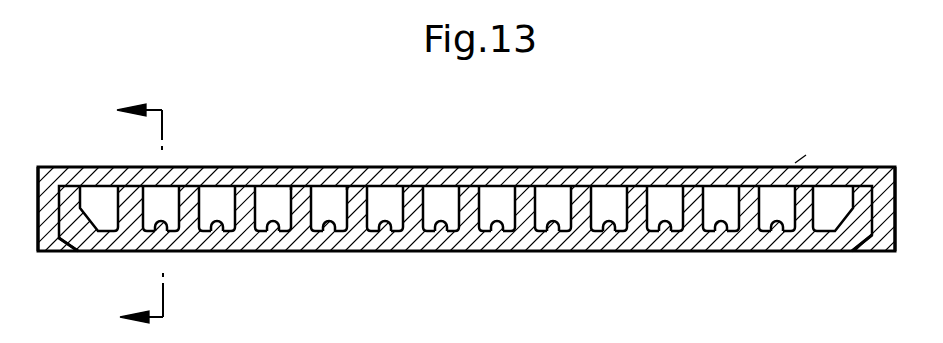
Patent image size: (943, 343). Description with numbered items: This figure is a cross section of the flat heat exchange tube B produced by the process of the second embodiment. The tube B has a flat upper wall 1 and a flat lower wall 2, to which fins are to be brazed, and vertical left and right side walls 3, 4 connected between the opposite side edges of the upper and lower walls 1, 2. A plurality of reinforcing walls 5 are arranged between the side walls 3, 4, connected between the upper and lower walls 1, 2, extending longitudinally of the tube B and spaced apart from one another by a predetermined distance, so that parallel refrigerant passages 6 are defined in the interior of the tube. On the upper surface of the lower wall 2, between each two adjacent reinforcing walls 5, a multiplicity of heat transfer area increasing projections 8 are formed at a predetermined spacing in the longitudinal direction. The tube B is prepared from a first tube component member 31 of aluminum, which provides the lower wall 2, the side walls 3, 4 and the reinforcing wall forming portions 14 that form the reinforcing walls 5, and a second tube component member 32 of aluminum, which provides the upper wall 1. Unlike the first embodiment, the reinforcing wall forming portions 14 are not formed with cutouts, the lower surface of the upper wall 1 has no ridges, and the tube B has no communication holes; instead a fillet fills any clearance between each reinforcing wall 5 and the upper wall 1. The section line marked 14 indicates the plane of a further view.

The upper wall 1 is at (578, 172).
The lower wall 2 is at (523, 235).
The left side wall 3 is at (48, 218).
The right side wall 4 is at (882, 215).
The reinforcing wall 5 is at (292, 193).
The refrigerant passage 6 is at (386, 205).
The heat transfer area increasing projection 8 is at (272, 226).
The reinforcing wall forming portion 14 is at (160, 211).
The first tube component member 31 is at (663, 238).
The second tube component member 32 is at (502, 175).
The flat heat exchange tube B is at (801, 150).